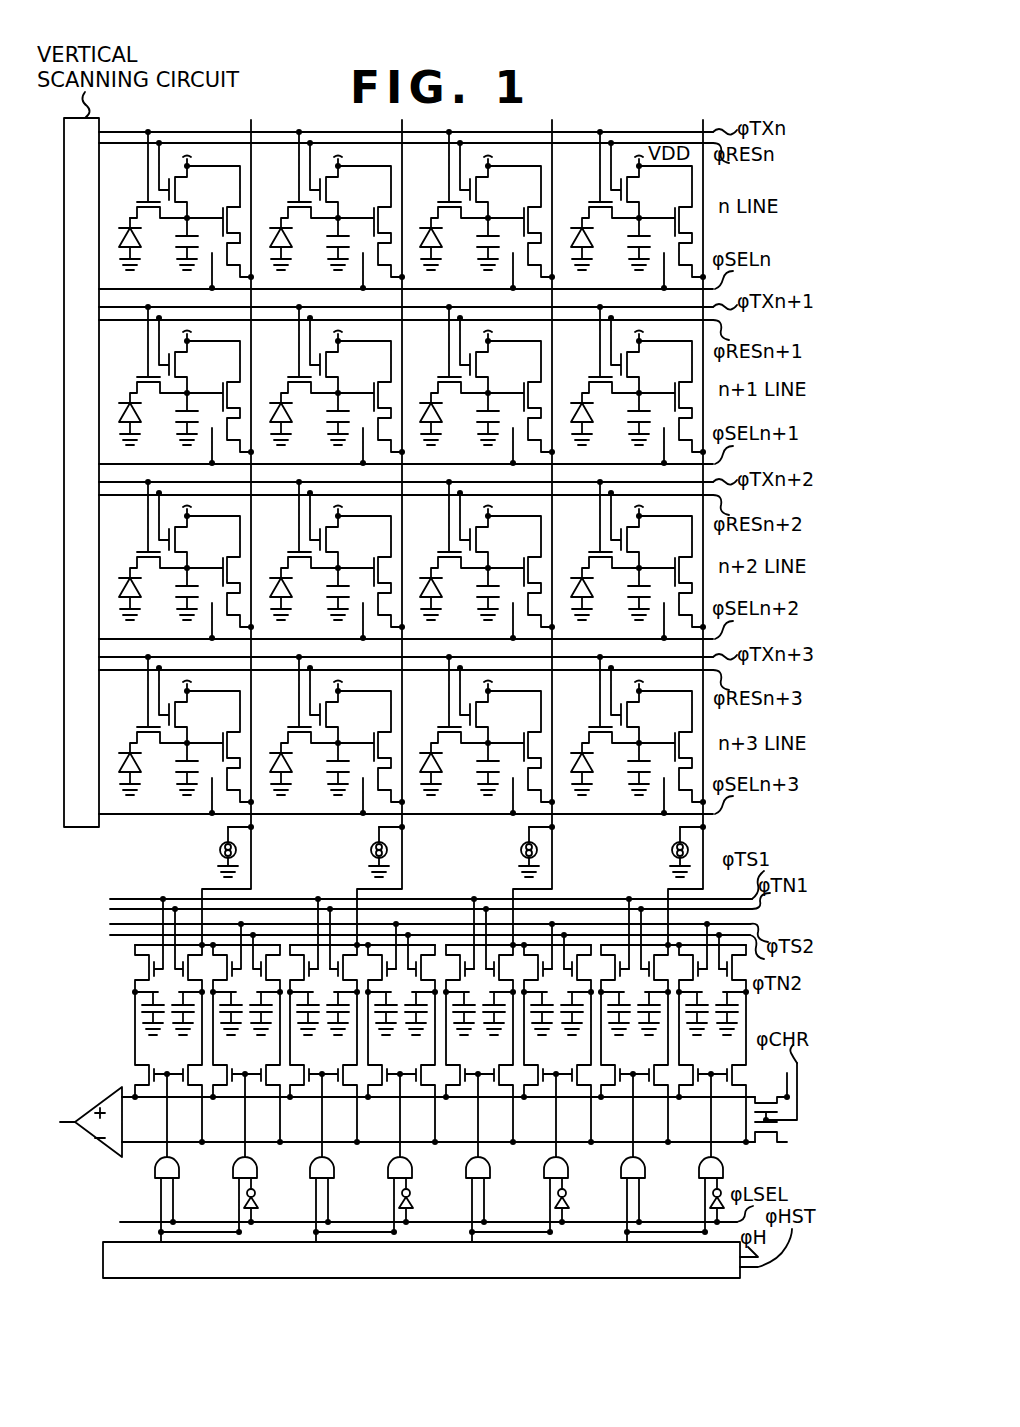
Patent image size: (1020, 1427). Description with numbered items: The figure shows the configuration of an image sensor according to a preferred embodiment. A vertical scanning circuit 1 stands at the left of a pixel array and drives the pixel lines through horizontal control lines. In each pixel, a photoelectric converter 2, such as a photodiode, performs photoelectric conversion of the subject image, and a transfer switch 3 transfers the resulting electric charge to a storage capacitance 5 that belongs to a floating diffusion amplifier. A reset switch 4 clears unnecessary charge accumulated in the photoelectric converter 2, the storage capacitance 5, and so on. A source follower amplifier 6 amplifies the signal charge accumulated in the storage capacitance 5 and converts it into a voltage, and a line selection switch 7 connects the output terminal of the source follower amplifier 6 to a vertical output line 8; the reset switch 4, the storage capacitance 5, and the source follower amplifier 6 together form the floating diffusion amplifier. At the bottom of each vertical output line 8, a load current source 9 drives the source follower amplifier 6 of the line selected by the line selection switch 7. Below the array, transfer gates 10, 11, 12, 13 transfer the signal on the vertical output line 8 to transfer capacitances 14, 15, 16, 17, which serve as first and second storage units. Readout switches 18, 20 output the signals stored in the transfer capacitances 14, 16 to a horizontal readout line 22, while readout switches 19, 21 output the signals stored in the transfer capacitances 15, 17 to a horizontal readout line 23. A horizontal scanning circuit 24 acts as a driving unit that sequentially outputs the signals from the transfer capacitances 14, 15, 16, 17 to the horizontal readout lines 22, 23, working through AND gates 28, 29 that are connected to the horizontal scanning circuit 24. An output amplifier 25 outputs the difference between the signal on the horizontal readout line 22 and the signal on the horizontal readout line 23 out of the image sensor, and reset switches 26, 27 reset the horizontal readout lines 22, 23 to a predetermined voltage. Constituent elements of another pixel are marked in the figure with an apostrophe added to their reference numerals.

The vertical scanning circuit 1 is at (85, 827).
The photoelectric converter 2 is at (122, 225).
The transfer switch 3 is at (154, 173).
The reset switch 4 is at (198, 179).
The storage capacitance 5 is at (175, 251).
The source follower amplifier 6 is at (231, 219).
The line selection switch 7 is at (242, 267).
The vertical output line 8 is at (251, 835).
The load current source 9 is at (218, 848).
The transfer gate 10 is at (131, 945).
The transfer gate 11 is at (180, 956).
The transfer gate 12 is at (230, 964).
The transfer gate 13 is at (272, 931).
The transfer capacitance 14 is at (152, 1029).
The transfer capacitance 15 is at (184, 1029).
The transfer capacitance 16 is at (230, 1029).
The transfer capacitance 17 is at (262, 1029).
The readout switch 18 is at (154, 1066).
The readout switch 19 is at (187, 1068).
The readout switch 20 is at (229, 1066).
The readout switch 21 is at (263, 1068).
The horizontal readout line 22 is at (124, 1092).
The horizontal readout line 23 is at (133, 1148).
The horizontal scanning circuit 24 is at (103, 1253).
The output amplifier 25 is at (86, 1132).
The reset switch 26 is at (787, 1073).
The reset switch 27 is at (765, 1140).
The AND gate 28 is at (197, 1158).
The AND gate 29 is at (267, 1154).